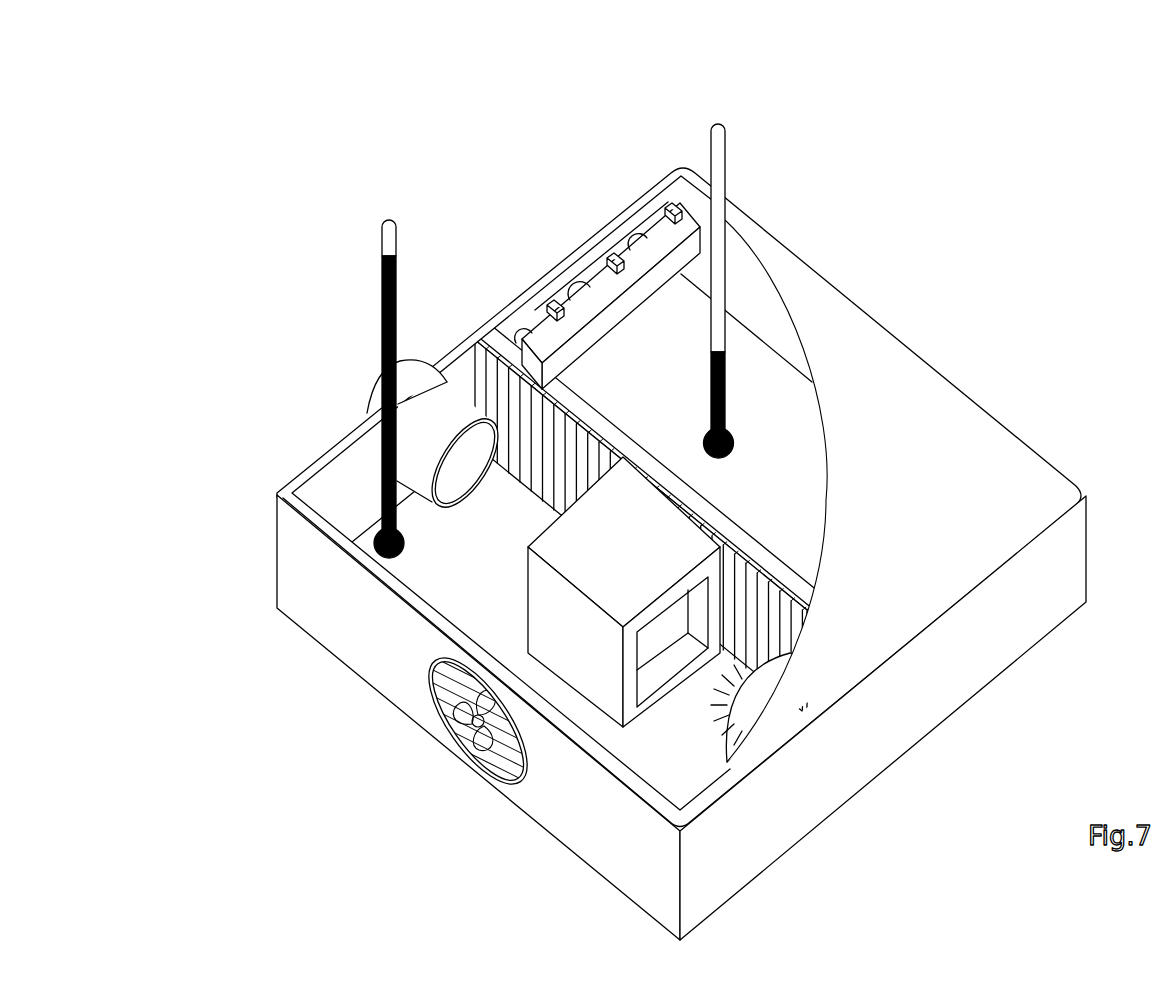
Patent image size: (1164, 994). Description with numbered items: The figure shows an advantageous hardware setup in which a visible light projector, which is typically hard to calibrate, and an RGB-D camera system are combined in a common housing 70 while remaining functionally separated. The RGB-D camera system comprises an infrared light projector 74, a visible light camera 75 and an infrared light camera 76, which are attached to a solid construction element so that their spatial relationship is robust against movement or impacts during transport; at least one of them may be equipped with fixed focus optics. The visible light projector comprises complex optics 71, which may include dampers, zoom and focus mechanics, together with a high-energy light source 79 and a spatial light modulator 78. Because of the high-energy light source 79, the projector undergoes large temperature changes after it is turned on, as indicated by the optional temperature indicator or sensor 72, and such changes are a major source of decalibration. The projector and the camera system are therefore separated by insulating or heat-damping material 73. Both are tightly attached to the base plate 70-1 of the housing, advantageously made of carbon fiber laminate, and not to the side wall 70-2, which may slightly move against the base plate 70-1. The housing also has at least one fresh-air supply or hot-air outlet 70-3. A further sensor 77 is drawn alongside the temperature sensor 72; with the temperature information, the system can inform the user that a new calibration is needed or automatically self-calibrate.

The housing 70 is at (638, 478).
The base plate 70-1 is at (478, 717).
The side wall 70-2 is at (1000, 655).
The fresh-air supply or hot-air outlet 70-3 is at (443, 737).
The complex optics 71 is at (458, 453).
The temperature indicator or sensor 72 is at (384, 264).
The insulating or heat-damping material 73 is at (497, 342).
The infrared light projector 74 is at (525, 348).
The visible light camera 75 is at (582, 290).
The infrared light camera 76 is at (640, 230).
The second sensor probe 77 is at (717, 353).
The spatial light modulator 78 is at (623, 547).
The high-energy light source 79 is at (740, 693).